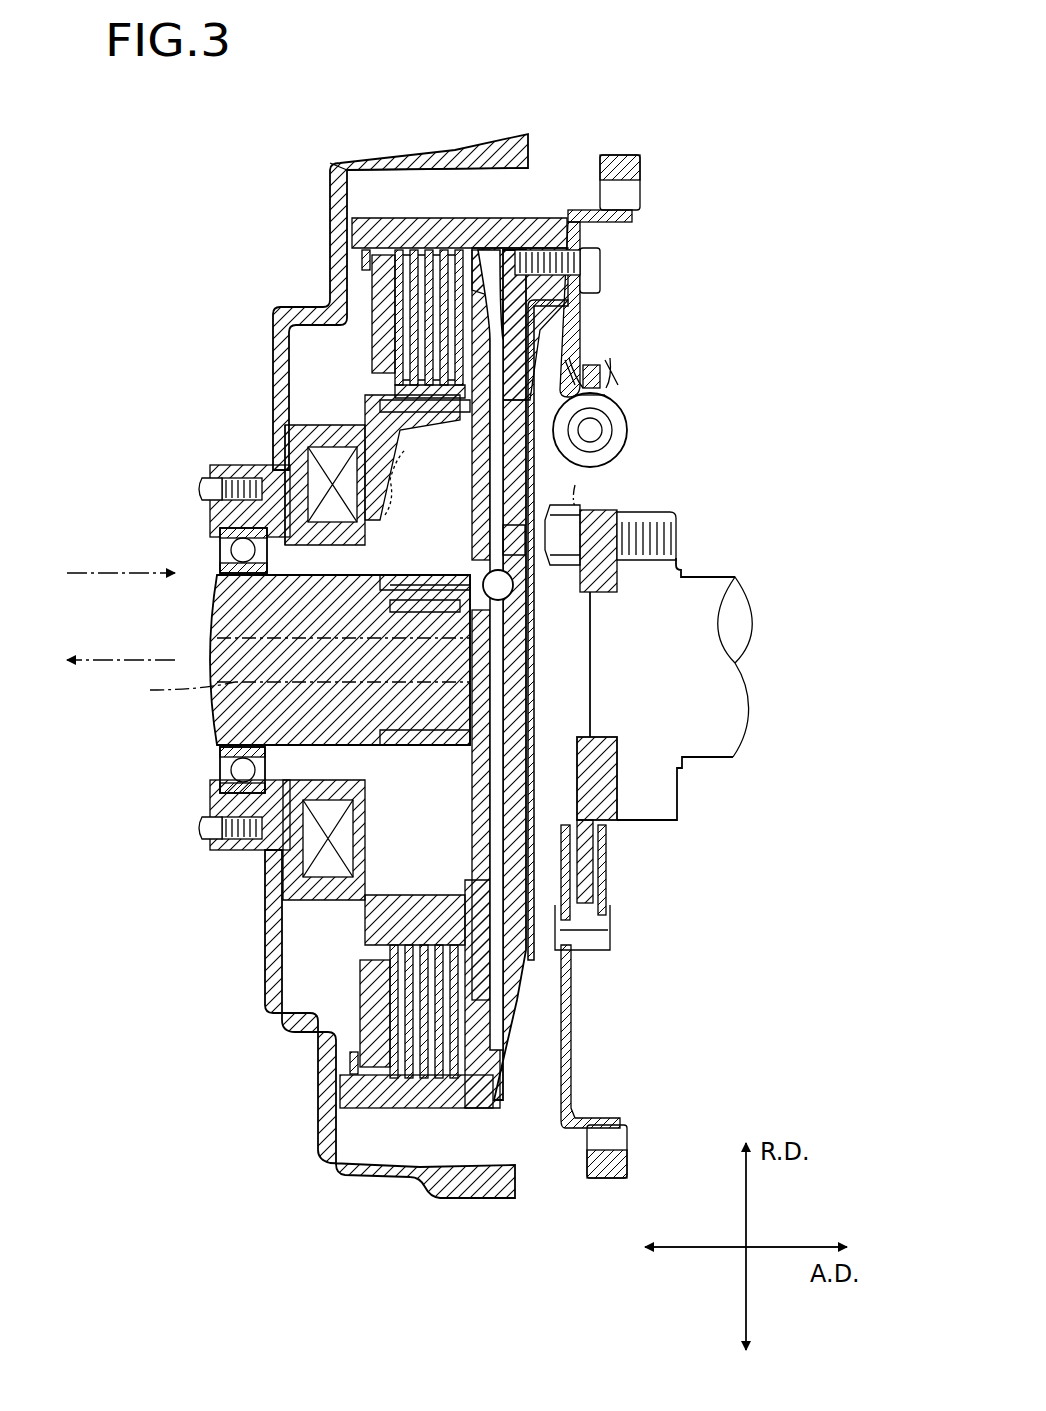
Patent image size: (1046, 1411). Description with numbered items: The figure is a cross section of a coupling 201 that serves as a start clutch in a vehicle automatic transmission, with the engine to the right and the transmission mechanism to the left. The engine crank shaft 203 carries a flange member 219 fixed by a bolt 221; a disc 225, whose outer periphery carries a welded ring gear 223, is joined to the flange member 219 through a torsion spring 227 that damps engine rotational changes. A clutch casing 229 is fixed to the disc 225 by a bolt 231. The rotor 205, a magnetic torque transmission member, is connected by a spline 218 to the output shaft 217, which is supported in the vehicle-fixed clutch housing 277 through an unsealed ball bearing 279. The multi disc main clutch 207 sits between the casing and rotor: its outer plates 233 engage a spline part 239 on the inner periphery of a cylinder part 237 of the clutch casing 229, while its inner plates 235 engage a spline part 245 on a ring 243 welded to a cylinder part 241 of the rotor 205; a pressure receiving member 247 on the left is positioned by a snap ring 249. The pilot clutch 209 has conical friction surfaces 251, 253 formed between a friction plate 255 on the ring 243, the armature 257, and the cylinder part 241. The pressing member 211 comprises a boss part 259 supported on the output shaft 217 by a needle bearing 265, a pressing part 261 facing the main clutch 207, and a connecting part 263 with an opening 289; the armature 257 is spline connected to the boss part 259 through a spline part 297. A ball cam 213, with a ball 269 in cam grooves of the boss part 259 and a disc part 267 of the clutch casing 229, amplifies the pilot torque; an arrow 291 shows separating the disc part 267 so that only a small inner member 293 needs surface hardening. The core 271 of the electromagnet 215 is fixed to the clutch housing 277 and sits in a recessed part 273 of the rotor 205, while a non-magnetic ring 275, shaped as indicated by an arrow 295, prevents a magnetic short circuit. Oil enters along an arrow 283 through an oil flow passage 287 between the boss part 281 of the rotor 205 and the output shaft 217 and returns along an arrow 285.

The coupling 201 is at (765, 148).
The engine crank shaft 203 is at (730, 690).
The rotor 205 is at (370, 385).
The main clutch 207 is at (420, 192).
The pilot clutch 209 is at (380, 905).
The pressing member 211 is at (540, 365).
The ball cam 213 is at (535, 540).
The electromagnet 215 is at (260, 425).
The output shaft 217 is at (232, 595).
The spline 218 is at (385, 585).
The flange member 219 is at (590, 738).
The bolt 221 is at (640, 535).
The ring gear 223 is at (618, 155).
The disc 225 is at (575, 305).
The torsion spring 227 is at (626, 420).
The clutch casing 229 is at (560, 215).
The bolt 231 is at (600, 255).
The outer plates 233 is at (395, 250).
The inner plates 235 is at (375, 390).
The cylinder part 237 is at (462, 248).
The spline part 239 is at (366, 258).
The cylinder part 241 is at (305, 402).
The ring 243 is at (378, 385).
The spline part 245 is at (540, 370).
The pressure receiving member 247 is at (360, 1040).
The snap ring 249 is at (350, 1062).
The conical friction surface 251 is at (575, 885).
The conical friction surface 253 is at (385, 905).
The friction plate 255 is at (585, 930).
The armature 257 is at (530, 780).
The boss part 259 is at (415, 595).
The pressing part 261 is at (505, 260).
The connecting part 263 is at (612, 386).
The needle bearing 265 is at (385, 730).
The disc part 267 is at (612, 432).
The ball 269 is at (540, 578).
The core 271 is at (265, 425).
The recessed part 273 is at (240, 535).
The non-magnetic ring 275 is at (255, 852).
The clutch housing 277 is at (338, 165).
The ball bearing 279 is at (240, 770).
The boss part 281 is at (275, 585).
The arrow 283 is at (108, 573).
The arrow 285 is at (108, 660).
The oil flow passage 287 is at (174, 685).
The opening 289 is at (450, 612).
The arrow 291 is at (585, 500).
The inner member 293 is at (595, 680).
The arrow 295 is at (398, 513).
The spline part 297 is at (395, 610).